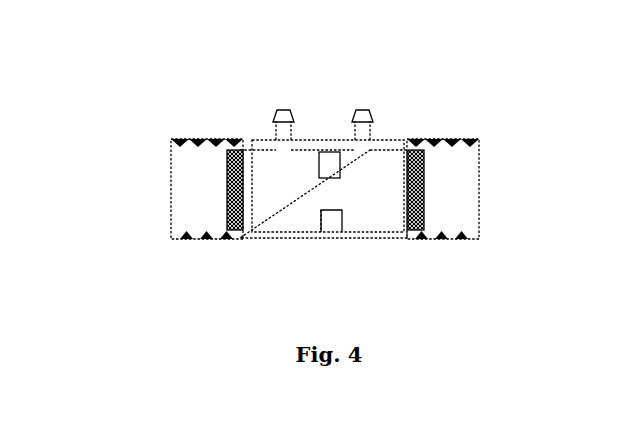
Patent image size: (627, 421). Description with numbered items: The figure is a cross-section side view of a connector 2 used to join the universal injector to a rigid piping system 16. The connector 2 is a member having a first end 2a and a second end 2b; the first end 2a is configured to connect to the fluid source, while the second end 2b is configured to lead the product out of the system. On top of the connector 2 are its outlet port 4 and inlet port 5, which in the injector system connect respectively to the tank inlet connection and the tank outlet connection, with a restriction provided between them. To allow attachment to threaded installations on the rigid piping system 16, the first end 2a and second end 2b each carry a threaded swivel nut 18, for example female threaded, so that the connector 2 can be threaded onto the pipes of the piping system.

The connector 2 is at (283, 235).
The first end 2a is at (162, 150).
The second end 2b is at (488, 165).
The outlet port 4 is at (279, 103).
The inlet port 5 is at (360, 103).
The rigid piping system 16 is at (323, 219).
The threaded swivel nuts 18 is at (325, 169).